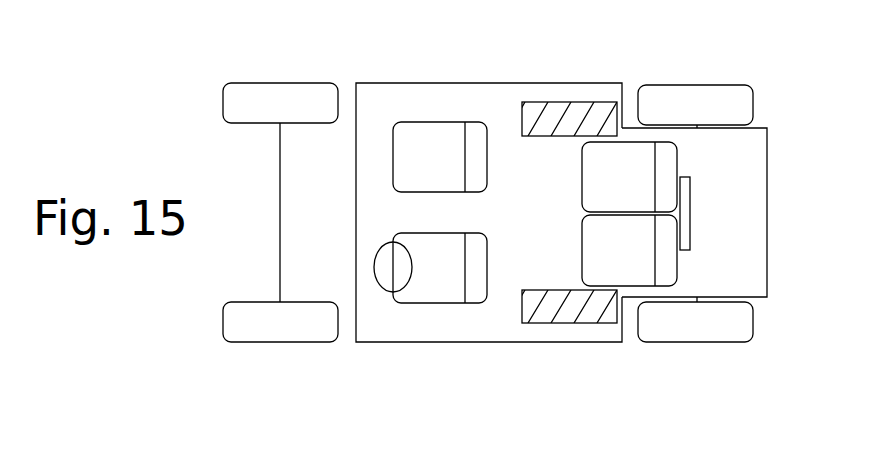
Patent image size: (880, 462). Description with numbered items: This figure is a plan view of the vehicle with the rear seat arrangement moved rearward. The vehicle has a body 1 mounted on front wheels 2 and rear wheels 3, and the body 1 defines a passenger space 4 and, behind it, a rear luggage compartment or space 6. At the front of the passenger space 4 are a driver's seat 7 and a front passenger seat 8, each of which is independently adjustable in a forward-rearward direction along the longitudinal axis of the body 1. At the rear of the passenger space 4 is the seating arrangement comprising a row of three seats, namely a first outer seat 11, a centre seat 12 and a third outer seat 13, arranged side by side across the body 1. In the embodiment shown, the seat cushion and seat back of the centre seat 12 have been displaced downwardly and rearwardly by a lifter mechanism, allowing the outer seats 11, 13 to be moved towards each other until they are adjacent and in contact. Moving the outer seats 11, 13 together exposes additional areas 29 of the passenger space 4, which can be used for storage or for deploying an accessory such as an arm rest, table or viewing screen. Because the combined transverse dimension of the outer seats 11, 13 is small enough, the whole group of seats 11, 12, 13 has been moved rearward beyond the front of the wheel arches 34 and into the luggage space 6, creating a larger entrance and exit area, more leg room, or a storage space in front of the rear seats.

The body 1 is at (418, 83).
The front wheels 2 is at (237, 115).
The rear wheels 3 is at (712, 93).
The passenger space 4 is at (498, 108).
The rear luggage compartment 6 is at (745, 230).
The driver's seat 7 is at (435, 292).
The front passenger seat 8 is at (403, 135).
The first outer seat 11 is at (590, 178).
The centre seat 12 is at (687, 220).
The third outer seat 13 is at (590, 250).
The additional areas 29 is at (595, 103).
The wheel arches 34 is at (747, 130).